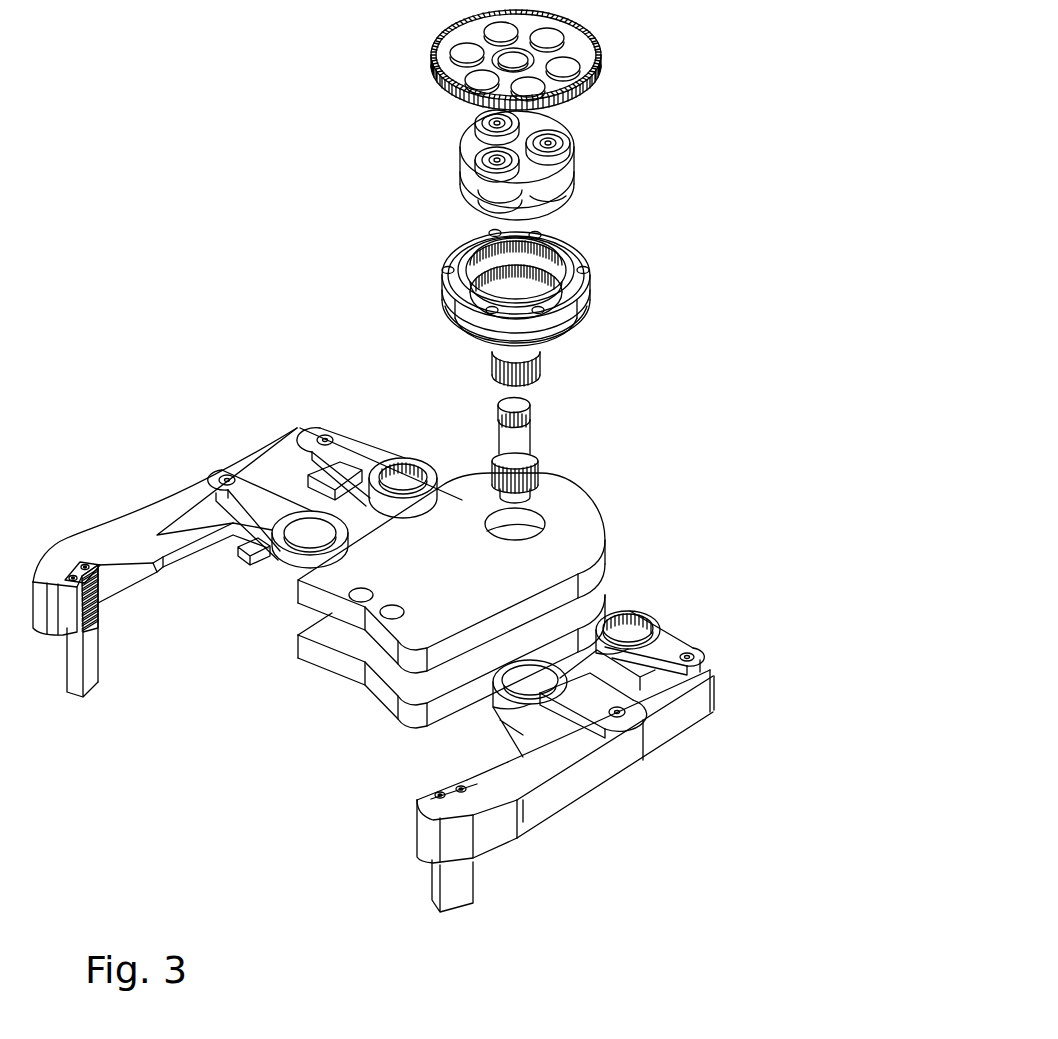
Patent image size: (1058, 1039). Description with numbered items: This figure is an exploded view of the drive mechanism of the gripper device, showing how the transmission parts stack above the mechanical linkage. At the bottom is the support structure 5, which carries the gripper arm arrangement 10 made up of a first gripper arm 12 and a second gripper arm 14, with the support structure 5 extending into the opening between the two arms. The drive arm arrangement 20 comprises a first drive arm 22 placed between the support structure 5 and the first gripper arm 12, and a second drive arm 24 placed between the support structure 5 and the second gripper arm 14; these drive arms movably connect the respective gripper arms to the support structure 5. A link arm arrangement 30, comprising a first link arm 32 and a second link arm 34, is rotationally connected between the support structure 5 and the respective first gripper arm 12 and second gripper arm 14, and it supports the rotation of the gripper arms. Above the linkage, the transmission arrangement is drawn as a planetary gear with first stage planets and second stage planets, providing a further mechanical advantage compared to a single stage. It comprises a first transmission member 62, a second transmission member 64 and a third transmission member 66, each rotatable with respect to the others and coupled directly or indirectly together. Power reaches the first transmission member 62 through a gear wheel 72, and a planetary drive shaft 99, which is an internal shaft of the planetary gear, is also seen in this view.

The support structure 5 is at (580, 542).
The gripper arm arrangement 10 is at (348, 403).
The first gripper arm 12 is at (143, 508).
The second gripper arm 14 is at (527, 781).
The drive arm arrangement 20 is at (766, 689).
The first drive arm 22 is at (343, 453).
The second drive arm 24 is at (680, 642).
The link arm arrangement 30 is at (650, 819).
The first link arm 32 is at (250, 497).
The second link arm 34 is at (600, 695).
The first transmission member 62 is at (530, 78).
The second transmission member 64 is at (547, 173).
The third transmission member 66 is at (587, 298).
The gear wheel 72 is at (582, 53).
The planetary drive shaft 99 is at (520, 442).